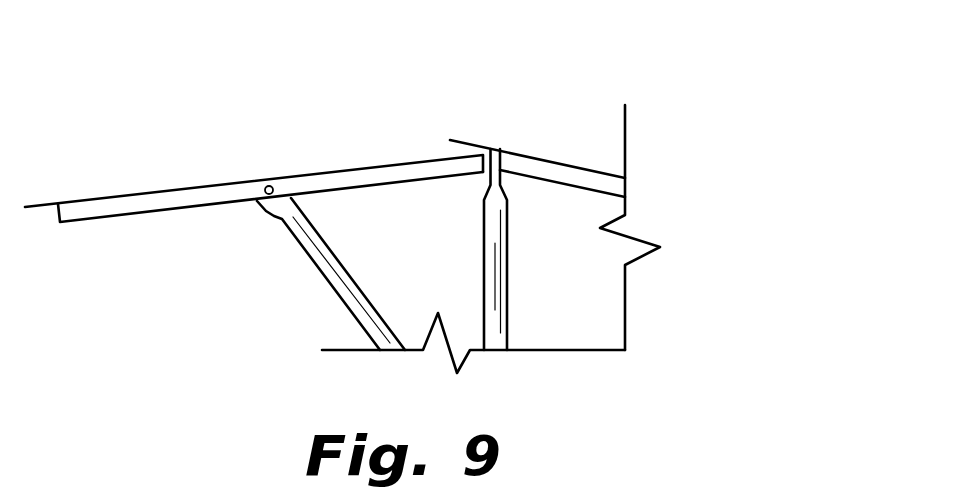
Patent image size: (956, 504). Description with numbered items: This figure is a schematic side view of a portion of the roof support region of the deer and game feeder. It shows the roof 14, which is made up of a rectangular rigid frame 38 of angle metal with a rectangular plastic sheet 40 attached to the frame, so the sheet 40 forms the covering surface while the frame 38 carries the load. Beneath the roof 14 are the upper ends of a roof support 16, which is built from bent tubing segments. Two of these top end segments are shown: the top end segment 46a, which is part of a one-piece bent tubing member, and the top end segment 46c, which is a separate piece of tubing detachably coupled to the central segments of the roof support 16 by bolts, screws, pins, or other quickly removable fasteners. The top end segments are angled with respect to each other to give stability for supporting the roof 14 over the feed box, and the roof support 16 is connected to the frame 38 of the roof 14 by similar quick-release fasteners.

The roof 14 is at (315, 125).
The sheet 40 is at (177, 188).
The frame 38 is at (130, 218).
The top end segment 46a is at (302, 250).
The top end segment 46c is at (507, 270).
The roof support 16 is at (308, 310).